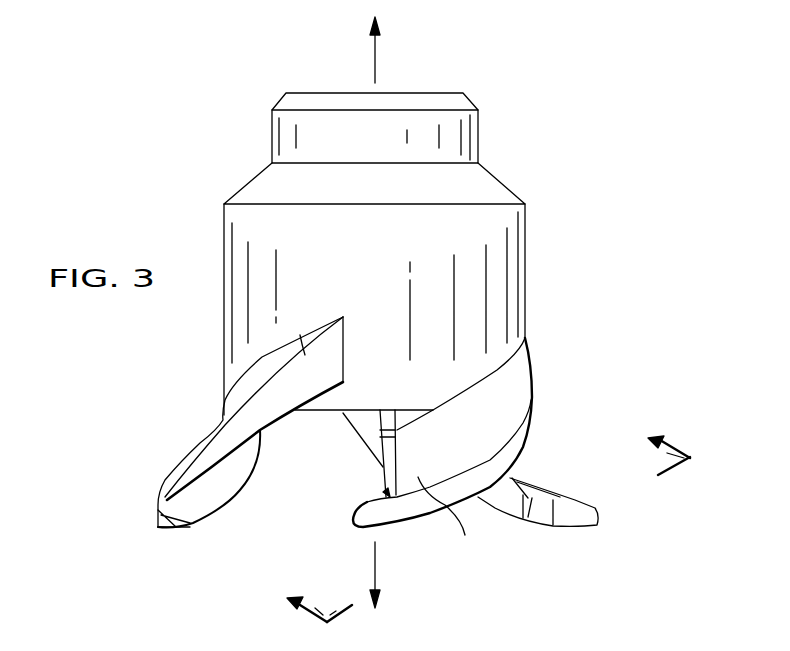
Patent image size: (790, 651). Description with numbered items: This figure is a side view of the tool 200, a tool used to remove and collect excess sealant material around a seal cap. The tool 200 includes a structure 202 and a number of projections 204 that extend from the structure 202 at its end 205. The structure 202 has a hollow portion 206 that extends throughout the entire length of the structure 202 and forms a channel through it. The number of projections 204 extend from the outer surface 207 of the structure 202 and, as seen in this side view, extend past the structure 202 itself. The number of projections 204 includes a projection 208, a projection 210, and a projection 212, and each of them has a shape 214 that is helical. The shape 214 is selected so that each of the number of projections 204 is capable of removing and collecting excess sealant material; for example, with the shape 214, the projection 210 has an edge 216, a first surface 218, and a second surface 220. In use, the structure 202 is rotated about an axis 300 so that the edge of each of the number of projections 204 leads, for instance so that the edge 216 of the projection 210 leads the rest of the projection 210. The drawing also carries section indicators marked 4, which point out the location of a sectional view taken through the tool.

The tool 200 is at (535, 132).
The structure 202 is at (243, 422).
The number of projections 204 is at (477, 420).
The end 205 is at (295, 414).
The hollow portion 206 is at (340, 414).
The outer surface 207 is at (526, 270).
The projection 208 is at (573, 500).
The projection 210 is at (525, 372).
The projection 212 is at (192, 448).
The shape 214 is at (501, 420).
The edge 216 is at (380, 470).
The first surface 218 is at (465, 533).
The second surface 220 is at (407, 524).
The axis 300 is at (375, 55).
The section line 4- 4 is at (477, 517).